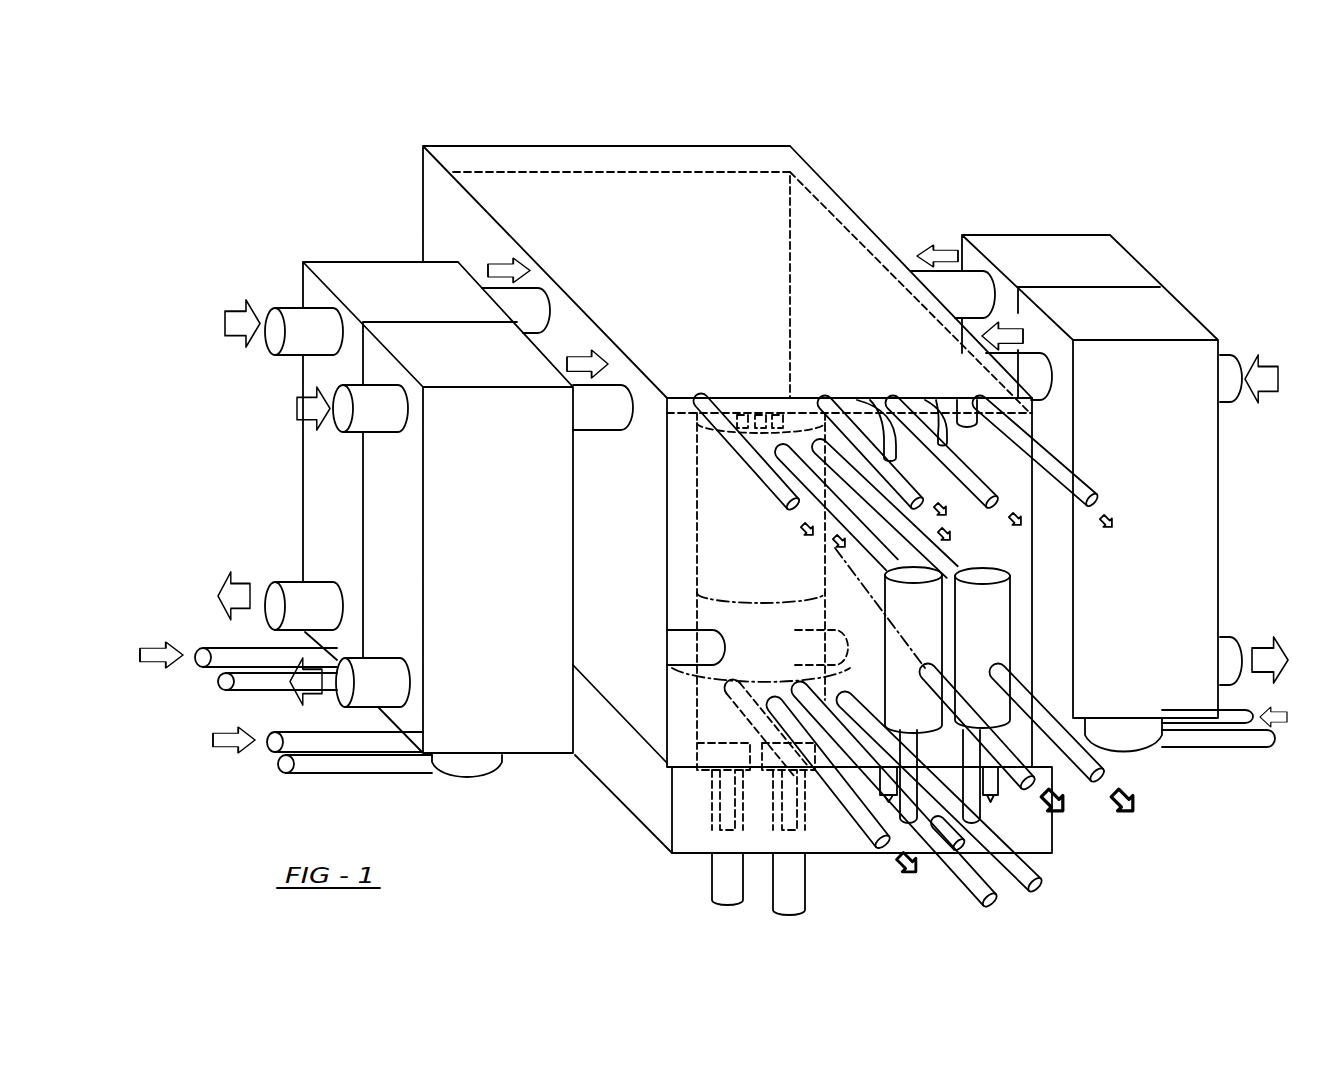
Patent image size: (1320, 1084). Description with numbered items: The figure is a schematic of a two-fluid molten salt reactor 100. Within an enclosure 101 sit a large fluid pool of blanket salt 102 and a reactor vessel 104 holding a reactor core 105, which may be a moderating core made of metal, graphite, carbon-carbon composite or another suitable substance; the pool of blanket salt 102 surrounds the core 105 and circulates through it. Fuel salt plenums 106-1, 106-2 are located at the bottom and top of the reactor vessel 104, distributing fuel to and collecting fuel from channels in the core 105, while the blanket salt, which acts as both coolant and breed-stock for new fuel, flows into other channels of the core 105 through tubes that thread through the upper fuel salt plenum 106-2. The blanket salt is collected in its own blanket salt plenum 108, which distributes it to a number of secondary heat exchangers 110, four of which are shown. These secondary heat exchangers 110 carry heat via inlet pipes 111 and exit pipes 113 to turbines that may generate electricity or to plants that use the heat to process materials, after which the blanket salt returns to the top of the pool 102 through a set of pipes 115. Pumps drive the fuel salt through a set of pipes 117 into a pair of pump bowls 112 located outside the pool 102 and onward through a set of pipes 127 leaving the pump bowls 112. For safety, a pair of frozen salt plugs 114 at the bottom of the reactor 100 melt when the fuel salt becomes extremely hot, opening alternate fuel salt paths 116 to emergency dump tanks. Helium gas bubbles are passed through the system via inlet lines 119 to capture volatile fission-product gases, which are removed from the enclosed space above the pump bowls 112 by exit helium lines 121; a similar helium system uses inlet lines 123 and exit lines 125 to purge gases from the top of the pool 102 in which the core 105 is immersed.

The molten salt reactor 100 is at (948, 160).
The enclosure 101 is at (460, 146).
The blanket salt 102 is at (758, 172).
The reactor vessel 104 is at (747, 555).
The reactor core 105 is at (697, 525).
The fuel salt plenum 106-1 is at (712, 690).
The upper fuel salt plenum 106-2 is at (710, 445).
The blanket salt plenum 108 is at (730, 613).
The secondary heat exchanger 110 is at (360, 273).
The inlet pipe 111 is at (298, 305).
The pump bowl 112 is at (1015, 568).
The exit pipe 113 is at (270, 630).
The frozen salt plug 114 is at (720, 801).
The pipe 115 is at (532, 281).
The alternate fuel salt path 116 is at (712, 878).
The pipe 117 is at (870, 553).
The inlet line 119 is at (937, 822).
The exit helium line 121 is at (1097, 755).
The inlet line 123 is at (205, 667).
The exit line 125 is at (840, 397).
The pipe 127 is at (935, 795).